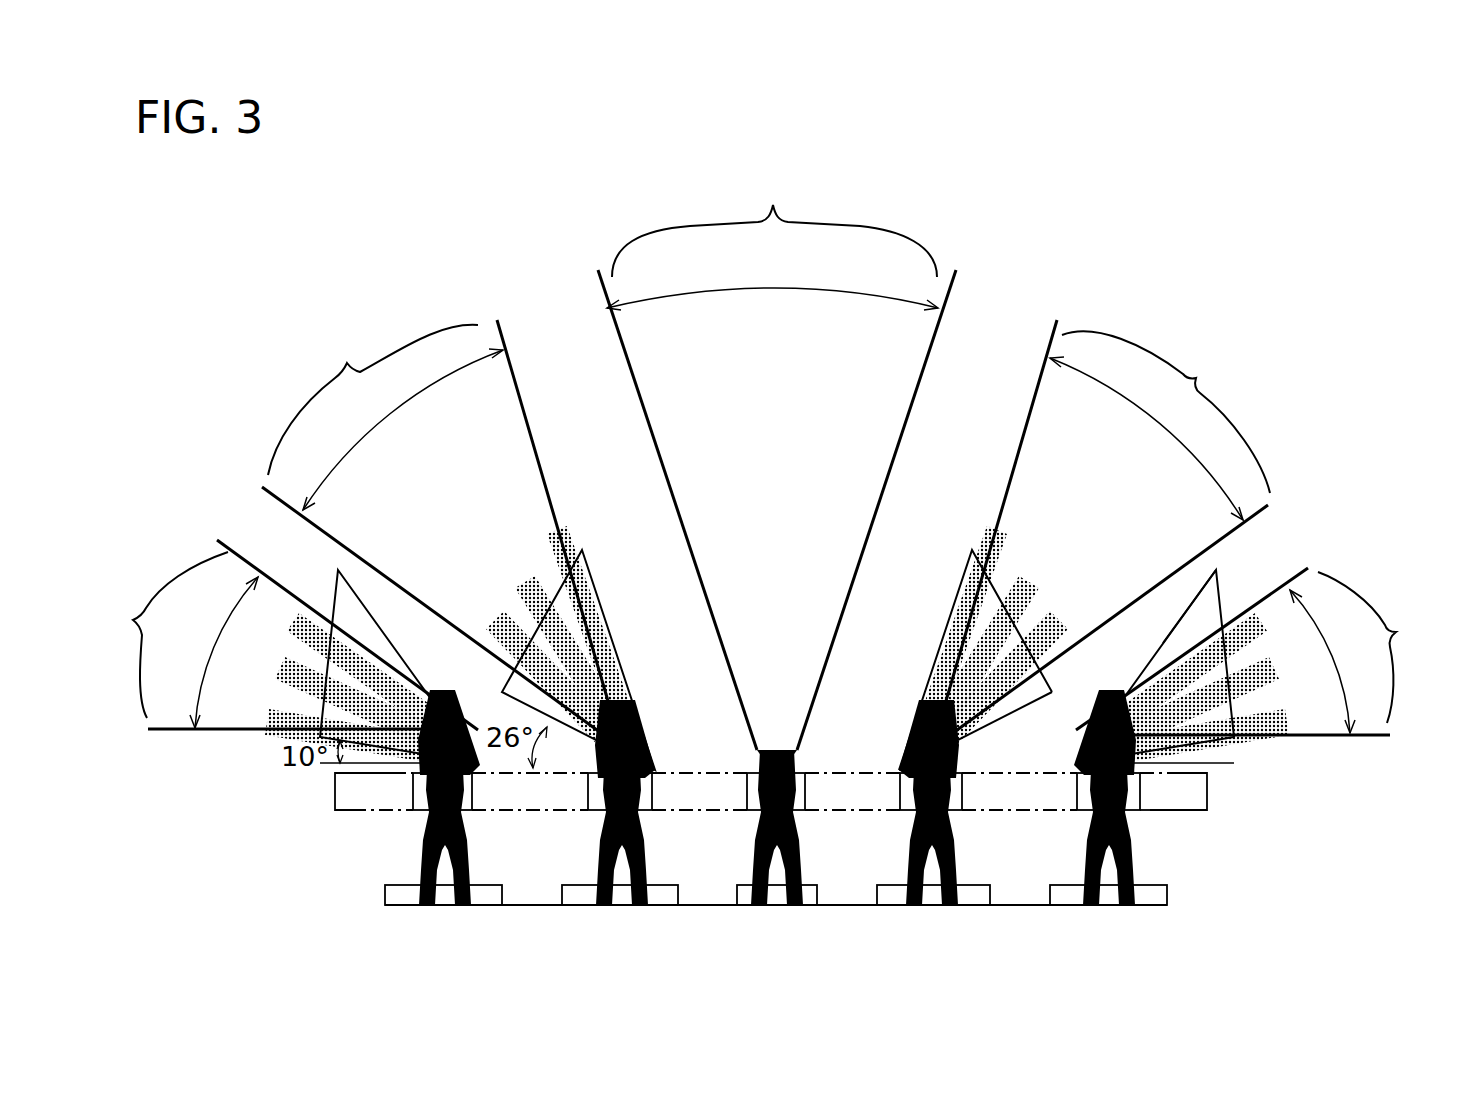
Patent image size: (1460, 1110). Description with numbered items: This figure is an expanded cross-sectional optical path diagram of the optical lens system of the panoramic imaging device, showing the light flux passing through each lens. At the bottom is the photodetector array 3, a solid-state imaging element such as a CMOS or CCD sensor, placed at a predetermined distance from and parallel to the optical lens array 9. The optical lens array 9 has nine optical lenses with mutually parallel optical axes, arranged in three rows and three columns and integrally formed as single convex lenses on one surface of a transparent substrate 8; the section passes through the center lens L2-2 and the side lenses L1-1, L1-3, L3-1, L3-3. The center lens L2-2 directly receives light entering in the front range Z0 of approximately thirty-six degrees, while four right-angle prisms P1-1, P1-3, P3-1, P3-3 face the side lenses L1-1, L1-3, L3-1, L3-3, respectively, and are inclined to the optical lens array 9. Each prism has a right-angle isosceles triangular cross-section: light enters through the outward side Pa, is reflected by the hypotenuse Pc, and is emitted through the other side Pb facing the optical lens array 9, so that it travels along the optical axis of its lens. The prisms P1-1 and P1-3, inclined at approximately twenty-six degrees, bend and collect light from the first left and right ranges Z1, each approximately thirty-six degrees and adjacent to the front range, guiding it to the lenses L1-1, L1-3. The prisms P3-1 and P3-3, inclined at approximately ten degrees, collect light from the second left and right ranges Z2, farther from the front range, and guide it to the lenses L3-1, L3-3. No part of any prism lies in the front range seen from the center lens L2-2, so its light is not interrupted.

The photodetector array 3 is at (1211, 873).
The transparent substrate 8 is at (347, 798).
The optical lens array 9 is at (287, 785).
The right-angle prism P1-1 is at (585, 550).
The right-angle prism P3-1 is at (333, 585).
The right-angle prism P1-3 is at (975, 556).
The right-angle prism P3-3 is at (1217, 578).
The optical lens L1-1 is at (645, 783).
The optical lens L2-2 is at (793, 797).
The optical lens L3-1 is at (465, 793).
The optical lens L1-3 is at (910, 785).
The optical lens L3-3 is at (1080, 790).
The outward side Pa is at (1237, 601).
The other side Pb is at (975, 759).
The hypotenuse Pc is at (930, 620).
The central zone Z0 is at (772, 242).
The first left and right ranges Z1 is at (769, 422).
The second left and right ranges Z2 is at (773, 642).